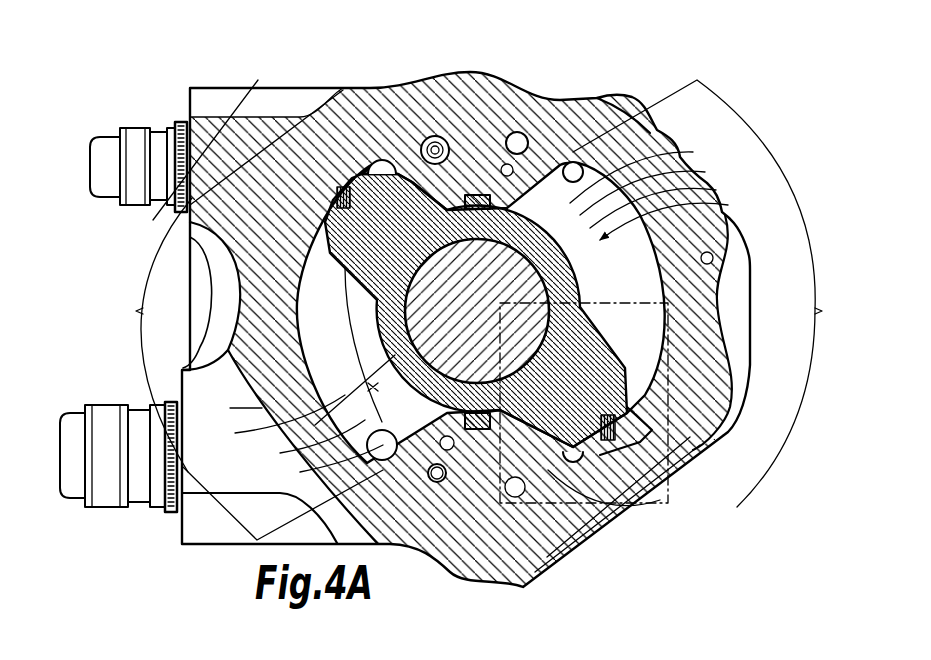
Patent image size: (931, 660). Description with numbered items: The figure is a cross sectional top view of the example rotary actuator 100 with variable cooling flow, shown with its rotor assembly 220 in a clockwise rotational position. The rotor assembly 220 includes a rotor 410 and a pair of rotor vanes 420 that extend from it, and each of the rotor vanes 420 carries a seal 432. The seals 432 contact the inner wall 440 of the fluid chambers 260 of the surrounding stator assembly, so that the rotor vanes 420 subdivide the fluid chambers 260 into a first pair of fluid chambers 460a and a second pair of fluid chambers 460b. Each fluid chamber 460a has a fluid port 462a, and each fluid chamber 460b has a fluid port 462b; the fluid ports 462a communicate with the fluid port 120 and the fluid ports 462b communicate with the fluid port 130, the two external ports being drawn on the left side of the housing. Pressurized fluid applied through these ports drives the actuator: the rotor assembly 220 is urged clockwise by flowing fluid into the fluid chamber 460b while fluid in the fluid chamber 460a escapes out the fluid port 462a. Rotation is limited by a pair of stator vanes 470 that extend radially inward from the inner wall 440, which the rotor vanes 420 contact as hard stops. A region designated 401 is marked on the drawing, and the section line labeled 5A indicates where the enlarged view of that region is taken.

The rotary actuator 100 is at (168, 62).
The fluid port 120 is at (75, 497).
The fluid port 130 is at (97, 140).
The rotor assembly 220 is at (705, 172).
The fluid chambers 260 is at (477, 293).
The region 401 is at (620, 340).
The rotor 410 is at (716, 190).
The rotor vanes 420 is at (330, 263).
The seal 432 is at (335, 168).
The inner wall 440 is at (262, 410).
The first pair of fluid chambers 460a is at (668, 498).
The second pair of fluid chambers 460b is at (728, 205).
The fluid port 462a is at (345, 88).
The fluid port 462b is at (693, 152).
The stator vanes 470 is at (390, 152).
The section line 5A is at (543, 371).